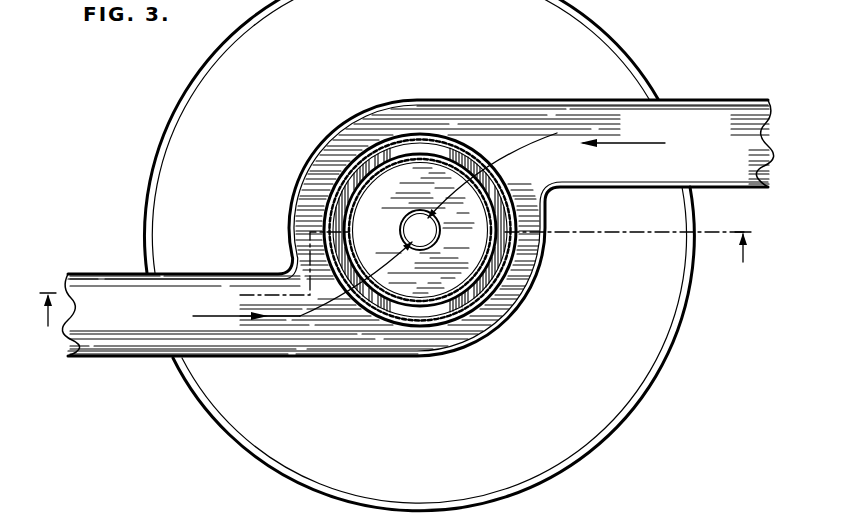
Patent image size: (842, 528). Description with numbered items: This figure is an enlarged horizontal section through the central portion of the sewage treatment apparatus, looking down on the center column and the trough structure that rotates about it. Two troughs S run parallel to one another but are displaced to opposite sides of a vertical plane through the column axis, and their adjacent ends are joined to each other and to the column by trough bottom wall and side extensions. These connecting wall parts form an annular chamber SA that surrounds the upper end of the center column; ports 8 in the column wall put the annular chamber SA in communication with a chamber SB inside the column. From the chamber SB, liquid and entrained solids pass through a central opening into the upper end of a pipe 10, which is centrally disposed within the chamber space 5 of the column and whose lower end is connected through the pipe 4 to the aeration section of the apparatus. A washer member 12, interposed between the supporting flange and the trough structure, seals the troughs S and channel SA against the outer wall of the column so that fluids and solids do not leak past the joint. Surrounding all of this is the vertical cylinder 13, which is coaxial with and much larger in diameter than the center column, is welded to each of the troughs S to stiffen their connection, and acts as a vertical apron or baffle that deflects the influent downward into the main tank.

The chamber space 5 is at (624, 49).
The vertical cylinder 13 is at (668, 347).
The trough S is at (683, 110).
The annular chamber SA is at (386, 130).
The chamber SB is at (421, 318).
The port 8 is at (350, 232).
The washer member 12 is at (382, 318).
The pipe 10 is at (437, 218).
The pipe 4 is at (390, 281).